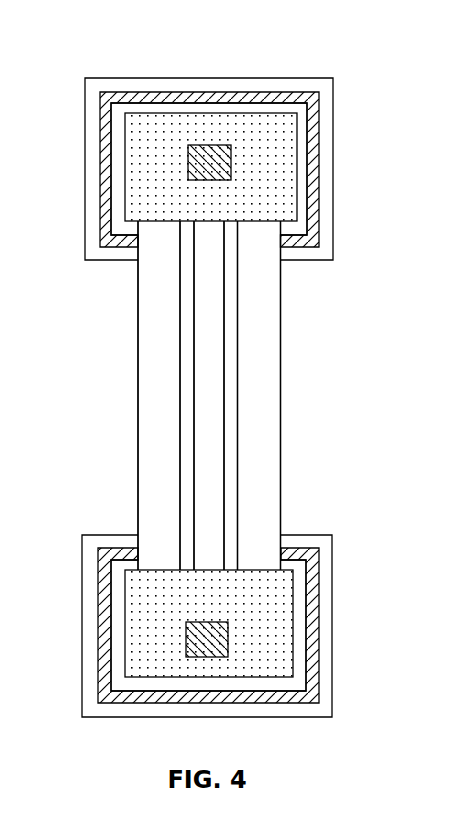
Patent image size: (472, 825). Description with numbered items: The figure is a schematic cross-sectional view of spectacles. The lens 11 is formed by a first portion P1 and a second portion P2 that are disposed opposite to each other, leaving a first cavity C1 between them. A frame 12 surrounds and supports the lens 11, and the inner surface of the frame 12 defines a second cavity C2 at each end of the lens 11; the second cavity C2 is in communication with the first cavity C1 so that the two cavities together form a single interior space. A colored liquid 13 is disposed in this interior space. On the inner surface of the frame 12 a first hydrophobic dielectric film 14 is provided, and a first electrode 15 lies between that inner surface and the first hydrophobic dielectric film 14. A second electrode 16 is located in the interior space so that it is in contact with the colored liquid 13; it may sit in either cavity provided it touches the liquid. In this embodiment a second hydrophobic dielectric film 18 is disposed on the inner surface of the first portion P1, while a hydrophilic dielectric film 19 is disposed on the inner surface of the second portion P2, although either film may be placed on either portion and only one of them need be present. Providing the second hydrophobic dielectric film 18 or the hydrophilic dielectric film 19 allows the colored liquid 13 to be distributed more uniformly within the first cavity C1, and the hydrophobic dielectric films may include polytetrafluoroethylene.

The lens 11 is at (282, 297).
The frame 12 is at (328, 205).
The colored liquid 13 is at (142, 166).
The first hydrophobic dielectric film 14 is at (298, 142).
The first electrode 15 is at (317, 177).
The second electrode 16 is at (209, 166).
The second hydrophobic dielectric film 18 is at (227, 418).
The hydrophilic dielectric film 19 is at (188, 425).
The first portion P1 is at (155, 362).
The second portion P2 is at (268, 362).
The first cavity C1 is at (200, 478).
The second cavity C2 is at (262, 113).